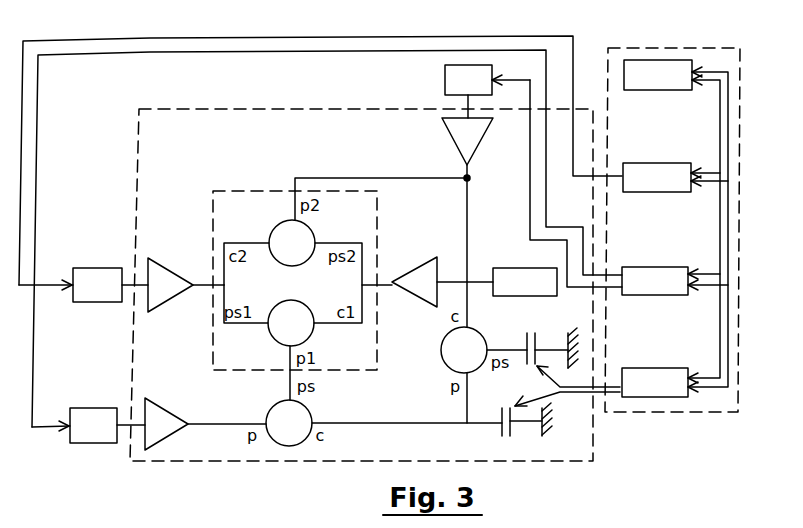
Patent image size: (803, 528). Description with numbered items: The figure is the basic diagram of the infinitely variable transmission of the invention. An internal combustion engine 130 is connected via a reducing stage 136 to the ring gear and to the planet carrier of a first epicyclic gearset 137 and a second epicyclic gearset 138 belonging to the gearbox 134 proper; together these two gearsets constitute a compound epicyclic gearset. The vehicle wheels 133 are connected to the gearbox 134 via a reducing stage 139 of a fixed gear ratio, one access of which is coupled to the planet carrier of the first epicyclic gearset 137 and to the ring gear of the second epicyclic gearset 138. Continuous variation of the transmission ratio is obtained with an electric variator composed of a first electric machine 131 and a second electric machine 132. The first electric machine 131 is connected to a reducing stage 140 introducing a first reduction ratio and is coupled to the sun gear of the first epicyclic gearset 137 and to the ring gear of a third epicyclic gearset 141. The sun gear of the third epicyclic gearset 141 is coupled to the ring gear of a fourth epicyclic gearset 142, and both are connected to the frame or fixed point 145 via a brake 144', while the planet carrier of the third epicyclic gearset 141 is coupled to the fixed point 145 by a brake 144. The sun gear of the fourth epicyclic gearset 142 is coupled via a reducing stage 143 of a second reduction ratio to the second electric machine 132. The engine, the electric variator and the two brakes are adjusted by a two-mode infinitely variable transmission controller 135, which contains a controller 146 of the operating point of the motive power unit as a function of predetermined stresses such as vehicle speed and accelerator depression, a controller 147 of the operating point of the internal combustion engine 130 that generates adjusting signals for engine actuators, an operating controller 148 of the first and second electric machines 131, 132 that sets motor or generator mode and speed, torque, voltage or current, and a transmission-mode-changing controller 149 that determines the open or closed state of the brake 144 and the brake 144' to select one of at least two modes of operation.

The internal combustion engine 130 is at (107, 268).
The first electric machine 131 is at (445, 80).
The second electric machine 132 is at (97, 408).
The vehicle wheels 133 is at (525, 282).
The gearbox 134 is at (172, 108).
The two-mode infinitely variable transmission controller 135 is at (645, 47).
The reducing stage 136 is at (175, 268).
The first epicyclic gearset 137 is at (286, 221).
The second epicyclic gearset 138 is at (275, 338).
The reducing stage 139 is at (415, 260).
The reducing stage 140 is at (455, 146).
The third epicyclic gearset 141 is at (442, 352).
The fourth epicyclic gearset 142 is at (297, 444).
The reducing stage 143 is at (166, 438).
The brake 144 is at (522, 334).
The brake 144' is at (524, 454).
The fixed point 145 is at (576, 370).
The controller of the operating point of the motive power unit 146 is at (658, 75).
The controller of the operating point of internal combustion engine 147 is at (657, 177).
The operating controller of first and second electric machines 148 is at (655, 281).
The transmission-mode-changing controller 149 is at (655, 382).